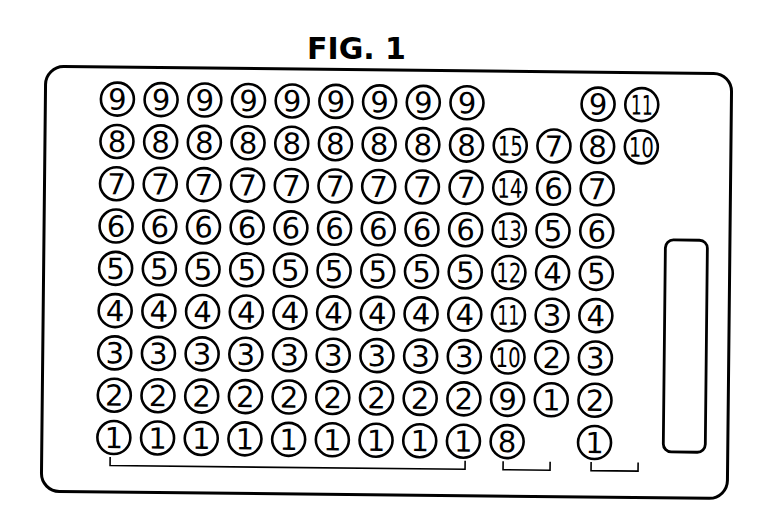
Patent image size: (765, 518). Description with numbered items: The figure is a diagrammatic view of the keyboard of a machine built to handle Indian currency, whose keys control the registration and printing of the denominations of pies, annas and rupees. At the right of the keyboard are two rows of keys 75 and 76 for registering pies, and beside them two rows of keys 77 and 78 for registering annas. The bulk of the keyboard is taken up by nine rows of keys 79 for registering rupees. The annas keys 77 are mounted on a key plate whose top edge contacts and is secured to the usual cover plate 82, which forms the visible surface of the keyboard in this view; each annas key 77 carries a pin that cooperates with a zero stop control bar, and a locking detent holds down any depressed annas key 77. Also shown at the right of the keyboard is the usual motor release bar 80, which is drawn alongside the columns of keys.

The keys 75 is at (642, 86).
The keys 76 is at (599, 88).
The annas keys 77 is at (563, 114).
The keys 78 is at (510, 128).
The keys 79 is at (389, 92).
The motor release bar 80 is at (694, 224).
The cover plate 82 is at (59, 478).